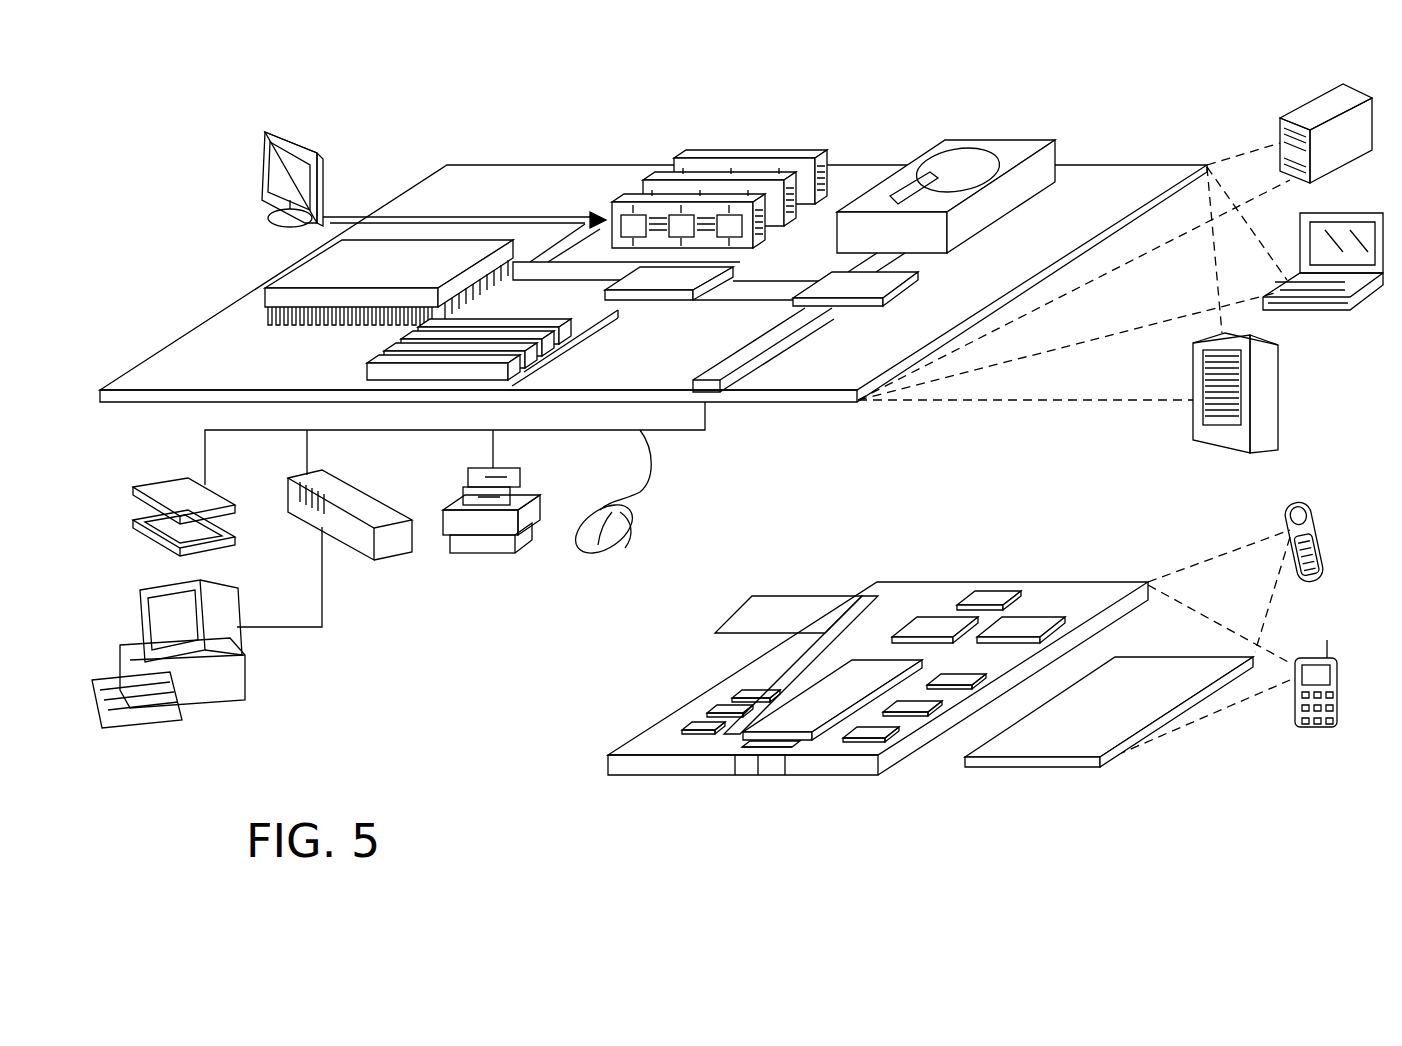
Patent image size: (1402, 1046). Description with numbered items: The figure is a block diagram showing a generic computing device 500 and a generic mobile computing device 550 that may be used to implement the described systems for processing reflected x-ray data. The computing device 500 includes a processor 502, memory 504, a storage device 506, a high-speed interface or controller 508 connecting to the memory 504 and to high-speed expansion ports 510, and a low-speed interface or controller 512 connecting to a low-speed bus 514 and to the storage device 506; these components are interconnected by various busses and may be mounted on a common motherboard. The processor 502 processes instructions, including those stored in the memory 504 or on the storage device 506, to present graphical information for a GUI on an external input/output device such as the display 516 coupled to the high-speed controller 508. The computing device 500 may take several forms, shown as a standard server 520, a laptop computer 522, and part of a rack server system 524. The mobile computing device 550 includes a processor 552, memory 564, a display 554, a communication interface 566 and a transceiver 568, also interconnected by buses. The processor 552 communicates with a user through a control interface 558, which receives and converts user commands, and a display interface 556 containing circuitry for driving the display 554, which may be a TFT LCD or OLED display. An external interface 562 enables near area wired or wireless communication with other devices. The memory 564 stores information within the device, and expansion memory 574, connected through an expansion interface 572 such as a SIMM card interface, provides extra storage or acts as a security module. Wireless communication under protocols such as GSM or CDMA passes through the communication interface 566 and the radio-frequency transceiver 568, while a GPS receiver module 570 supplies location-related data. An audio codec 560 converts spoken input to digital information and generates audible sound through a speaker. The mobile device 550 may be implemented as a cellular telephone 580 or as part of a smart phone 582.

The computing device 500 is at (397, 104).
The processor 502 is at (290, 272).
The memory 504 is at (752, 160).
The storage device 506 is at (990, 140).
The high-speed interface or controller 508 is at (684, 273).
The high-speed expansion ports 510 is at (398, 353).
The low-speed interface or controller 512 is at (829, 279).
The low-speed bus 514 is at (714, 372).
The display 516 is at (265, 135).
The standard server 520 is at (1304, 110).
The laptop computer 522 is at (1357, 211).
The rack server system 524 is at (1279, 392).
The mobile computing device 550 is at (560, 786).
The processor 552 is at (803, 706).
The display 554 is at (1147, 674).
The display interface 556 is at (884, 737).
The control interface 558 is at (920, 705).
The audio codec 560 is at (946, 669).
The external interface 562 is at (757, 775).
The memory 564 is at (714, 712).
The communication interface 566 is at (940, 628).
The transceiver 568 is at (1030, 630).
The GPS receiver module 570 is at (988, 600).
The expansion interface 572 is at (860, 595).
The expansion memory 574 is at (773, 596).
The cellular telephone 580 is at (1298, 505).
The smart phone 582 is at (1306, 658).